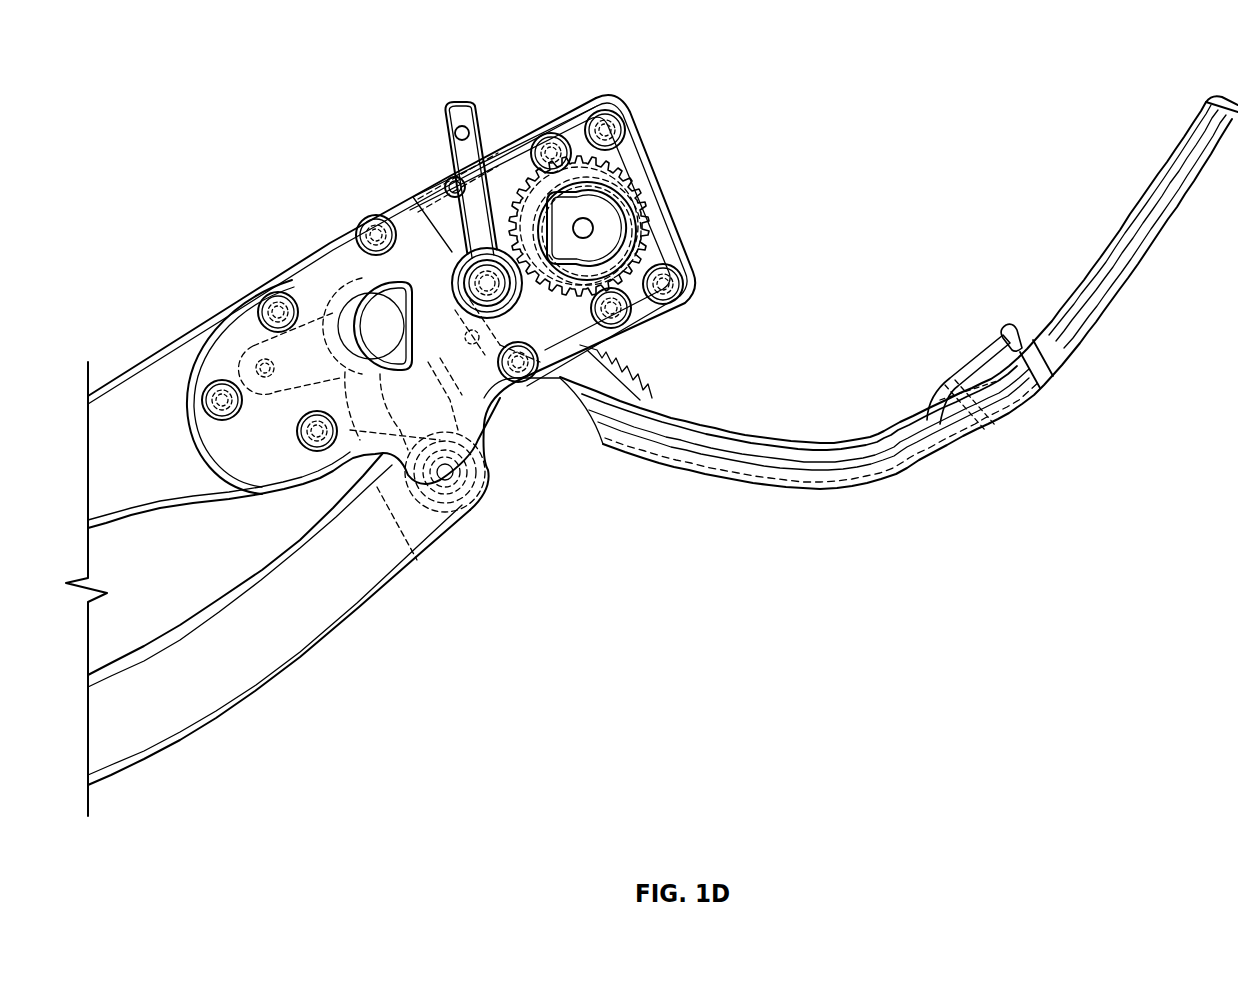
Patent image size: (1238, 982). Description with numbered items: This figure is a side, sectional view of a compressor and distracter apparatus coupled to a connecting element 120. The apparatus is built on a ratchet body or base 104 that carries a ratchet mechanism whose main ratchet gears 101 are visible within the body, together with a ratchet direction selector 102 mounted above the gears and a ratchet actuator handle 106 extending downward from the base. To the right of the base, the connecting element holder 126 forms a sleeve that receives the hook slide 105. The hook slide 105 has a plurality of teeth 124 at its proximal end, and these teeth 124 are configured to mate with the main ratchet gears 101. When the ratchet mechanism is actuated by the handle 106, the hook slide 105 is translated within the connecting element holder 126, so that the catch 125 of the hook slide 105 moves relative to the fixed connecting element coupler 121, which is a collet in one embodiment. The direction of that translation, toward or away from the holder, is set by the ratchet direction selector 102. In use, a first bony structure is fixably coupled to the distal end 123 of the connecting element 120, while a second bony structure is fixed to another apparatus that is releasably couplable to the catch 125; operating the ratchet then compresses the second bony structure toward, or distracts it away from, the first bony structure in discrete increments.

The main ratchet gears 101 is at (555, 263).
The ratchet direction selector 102 is at (465, 115).
The ratchet body or base 104 is at (93, 393).
The hook slide 105 is at (953, 377).
The ratchet actuator handle 106 is at (167, 637).
The connecting element 120 is at (1137, 213).
The connecting element coupler 121 is at (1053, 380).
The distal end 123 is at (1221, 94).
The teeth 124 is at (607, 378).
The catch 125 is at (1003, 338).
The connecting element holder 126 is at (733, 481).